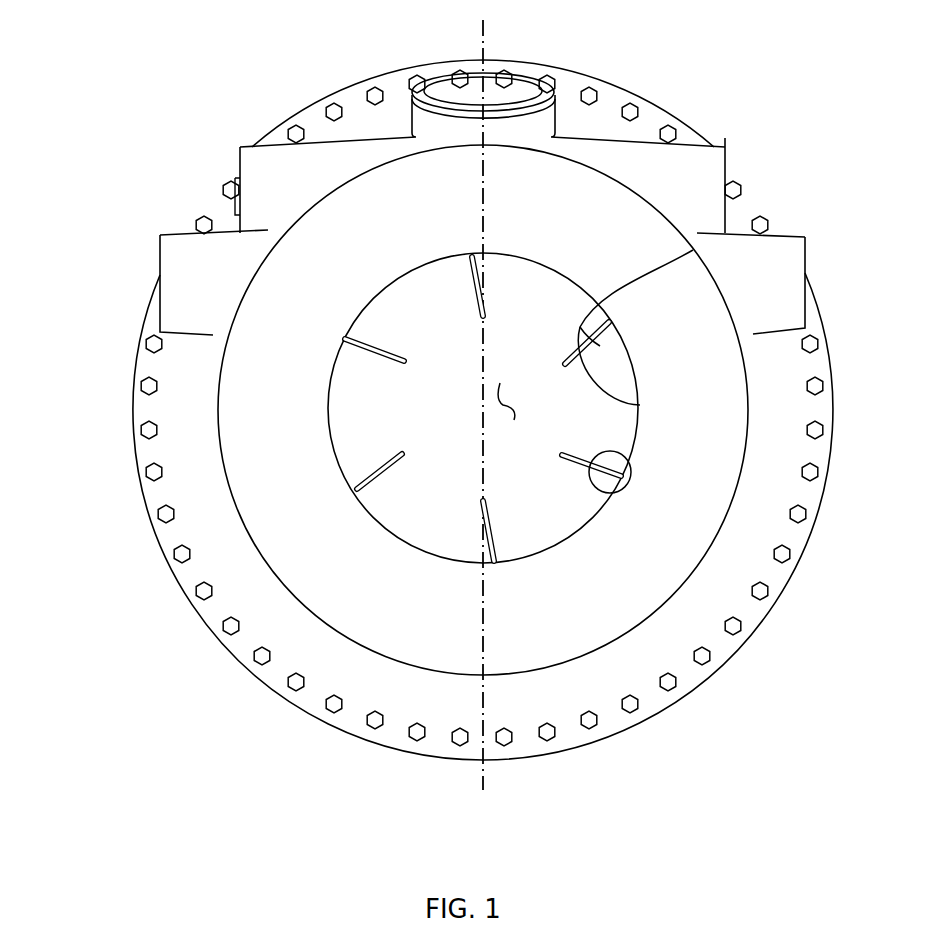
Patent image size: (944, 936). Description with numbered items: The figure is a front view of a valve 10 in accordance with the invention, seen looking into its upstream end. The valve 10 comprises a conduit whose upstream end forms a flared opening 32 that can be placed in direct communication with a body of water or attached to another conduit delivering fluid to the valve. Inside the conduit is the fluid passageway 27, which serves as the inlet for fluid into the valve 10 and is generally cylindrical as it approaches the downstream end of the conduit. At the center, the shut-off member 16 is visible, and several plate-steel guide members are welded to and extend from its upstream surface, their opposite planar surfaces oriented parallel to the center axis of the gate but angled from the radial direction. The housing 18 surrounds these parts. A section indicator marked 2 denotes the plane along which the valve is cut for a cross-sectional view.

The valve 10 is at (137, 144).
The shut-off member 16 is at (420, 502).
The housing 18 is at (670, 177).
The fluid passageway 27 is at (500, 407).
The flared opening 32 is at (547, 222).
The section line 2 is at (470, 25).